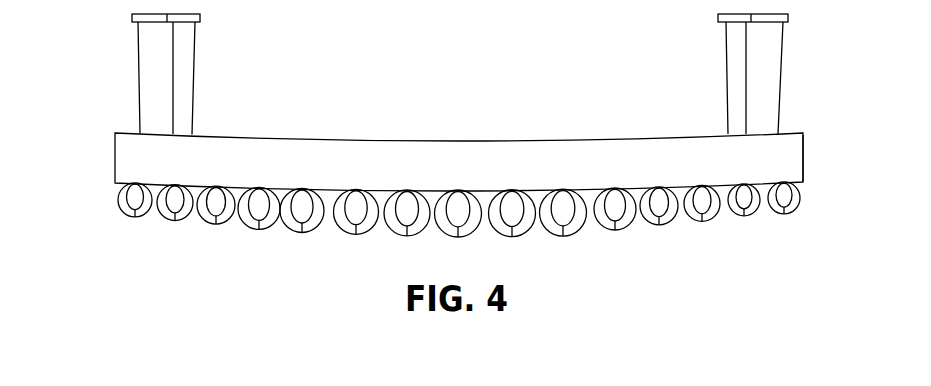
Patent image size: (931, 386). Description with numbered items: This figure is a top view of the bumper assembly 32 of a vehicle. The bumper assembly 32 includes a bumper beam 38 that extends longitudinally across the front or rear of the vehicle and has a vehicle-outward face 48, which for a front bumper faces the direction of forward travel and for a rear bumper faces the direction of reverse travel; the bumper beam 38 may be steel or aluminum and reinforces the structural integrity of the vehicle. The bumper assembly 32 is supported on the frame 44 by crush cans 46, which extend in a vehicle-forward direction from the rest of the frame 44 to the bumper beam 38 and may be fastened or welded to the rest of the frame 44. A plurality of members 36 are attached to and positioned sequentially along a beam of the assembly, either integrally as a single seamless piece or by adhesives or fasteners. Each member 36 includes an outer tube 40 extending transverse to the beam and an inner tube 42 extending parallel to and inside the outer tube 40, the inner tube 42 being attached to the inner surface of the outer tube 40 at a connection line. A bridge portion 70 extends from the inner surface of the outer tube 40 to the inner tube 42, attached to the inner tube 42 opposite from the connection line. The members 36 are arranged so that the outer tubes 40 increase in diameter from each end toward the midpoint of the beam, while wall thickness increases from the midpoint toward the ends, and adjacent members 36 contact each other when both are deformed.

The bumper assembly 32 is at (464, 124).
The member 36 is at (208, 224).
The bumper beam 38 is at (341, 140).
The outer tube 40 is at (613, 230).
The inner tube 42 is at (673, 190).
The frame 44 is at (130, 63).
The crush can 46 is at (426, 67).
The vehicle-outward face 48 is at (803, 186).
The bridge portion 70 is at (460, 237).